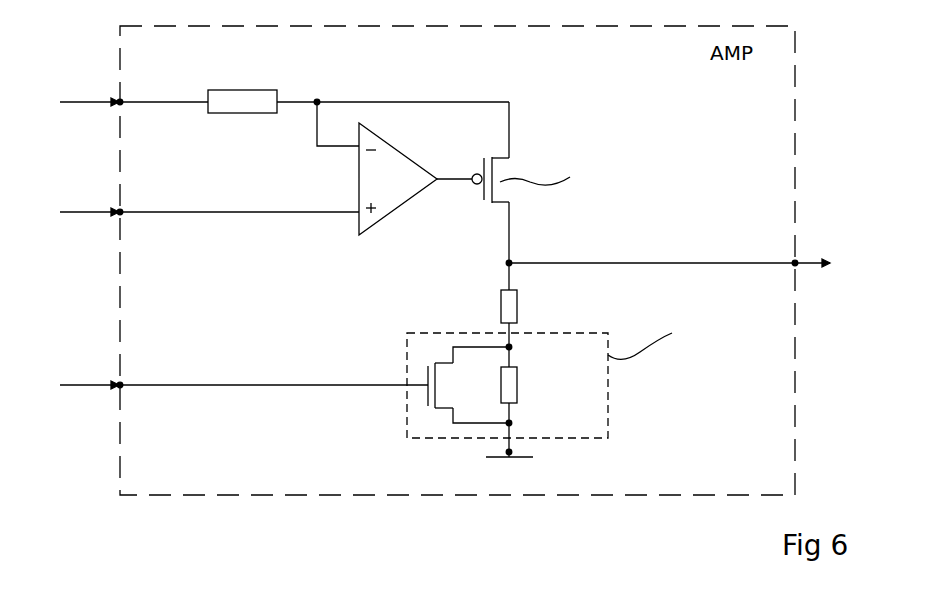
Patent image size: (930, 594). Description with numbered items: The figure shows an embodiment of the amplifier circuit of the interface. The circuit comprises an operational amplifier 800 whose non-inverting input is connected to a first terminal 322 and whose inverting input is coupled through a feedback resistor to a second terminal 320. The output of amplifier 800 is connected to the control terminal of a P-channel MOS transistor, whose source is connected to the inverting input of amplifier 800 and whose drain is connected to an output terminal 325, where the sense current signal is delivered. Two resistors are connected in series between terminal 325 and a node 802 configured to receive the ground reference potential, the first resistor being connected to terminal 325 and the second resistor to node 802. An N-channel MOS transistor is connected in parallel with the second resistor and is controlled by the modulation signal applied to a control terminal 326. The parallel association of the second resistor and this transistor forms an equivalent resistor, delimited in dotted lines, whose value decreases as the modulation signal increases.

The terminal 320 is at (122, 102).
The terminal 322 is at (122, 212).
The terminal 325 is at (790, 263).
The terminal 326 is at (122, 385).
The operational amplifier 800 is at (397, 204).
The node 802 is at (513, 452).